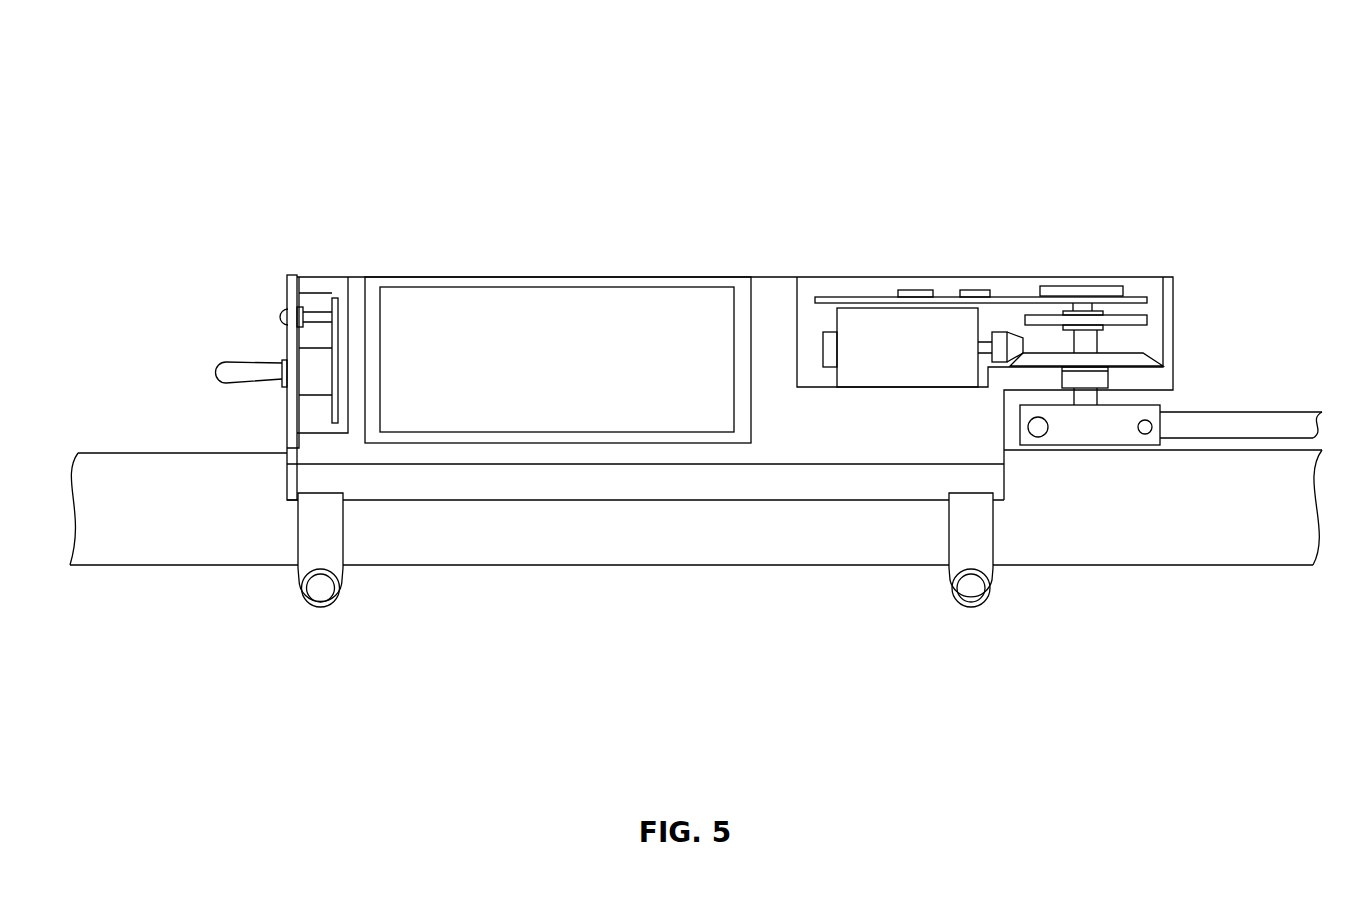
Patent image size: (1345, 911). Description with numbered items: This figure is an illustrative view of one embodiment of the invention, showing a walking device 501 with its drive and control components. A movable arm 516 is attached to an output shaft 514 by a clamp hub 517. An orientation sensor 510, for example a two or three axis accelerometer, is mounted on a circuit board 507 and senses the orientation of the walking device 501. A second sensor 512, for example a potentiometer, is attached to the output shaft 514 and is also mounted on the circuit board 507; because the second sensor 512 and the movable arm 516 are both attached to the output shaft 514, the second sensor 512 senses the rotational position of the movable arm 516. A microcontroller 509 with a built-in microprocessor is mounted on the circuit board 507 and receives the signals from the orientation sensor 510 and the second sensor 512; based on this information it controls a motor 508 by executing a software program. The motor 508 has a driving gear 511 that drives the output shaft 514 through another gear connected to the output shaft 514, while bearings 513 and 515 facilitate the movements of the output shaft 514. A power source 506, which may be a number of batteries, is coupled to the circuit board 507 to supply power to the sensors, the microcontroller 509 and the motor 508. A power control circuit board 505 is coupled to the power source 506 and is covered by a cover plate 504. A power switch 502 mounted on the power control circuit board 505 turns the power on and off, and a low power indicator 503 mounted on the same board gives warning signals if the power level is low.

The walking device 501 is at (235, 537).
The power switch 502 is at (207, 366).
The low power indicator 503 is at (275, 309).
The cover plate 504 is at (288, 270).
The power control circuit board 505 is at (339, 299).
The power source 506 is at (561, 345).
The circuit board 507 is at (822, 294).
The motor 508 is at (900, 352).
The microcontroller 509 is at (908, 289).
The orientation sensor 510 is at (971, 289).
The driving gear 511 is at (1016, 331).
The second sensor 512 is at (1110, 286).
The bearing 513 is at (1149, 311).
The output shaft 514 is at (1102, 344).
The bearing 515 is at (1112, 375).
The movable arm 516 is at (1287, 432).
The clamp hub 517 is at (1097, 449).